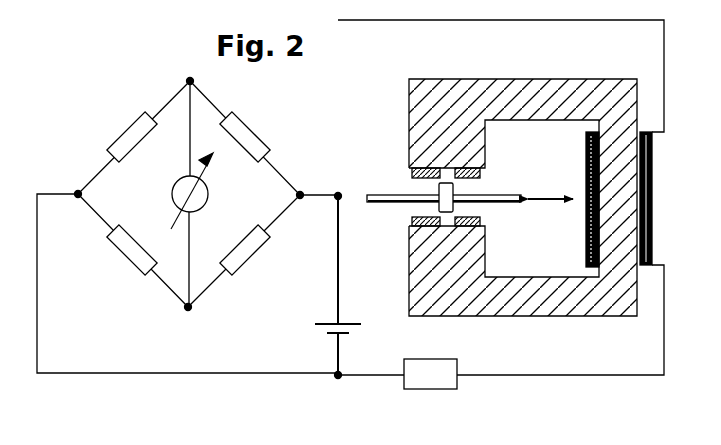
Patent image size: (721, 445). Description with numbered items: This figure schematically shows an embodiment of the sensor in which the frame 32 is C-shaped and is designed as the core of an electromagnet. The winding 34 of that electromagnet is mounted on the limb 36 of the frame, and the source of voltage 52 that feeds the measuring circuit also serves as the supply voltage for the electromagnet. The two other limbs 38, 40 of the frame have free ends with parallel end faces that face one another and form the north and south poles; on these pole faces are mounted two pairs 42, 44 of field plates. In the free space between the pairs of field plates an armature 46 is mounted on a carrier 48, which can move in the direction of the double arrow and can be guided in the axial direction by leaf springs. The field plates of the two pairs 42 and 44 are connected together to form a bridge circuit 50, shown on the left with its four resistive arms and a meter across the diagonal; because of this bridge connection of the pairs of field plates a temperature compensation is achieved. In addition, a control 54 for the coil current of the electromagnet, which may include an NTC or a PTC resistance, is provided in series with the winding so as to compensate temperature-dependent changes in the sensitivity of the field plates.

The frame 32 is at (492, 320).
The winding 34 is at (653, 150).
The limb 36 is at (615, 163).
The limb 38 is at (528, 97).
The limb 40 is at (557, 298).
The pair of field plates 42 is at (482, 175).
The pair of field plates 44 is at (479, 223).
The armature 46 is at (447, 190).
The carrier 48 is at (389, 199).
The bridge circuit 50 is at (158, 104).
The source of voltage 52 is at (347, 322).
The control 54 is at (415, 368).